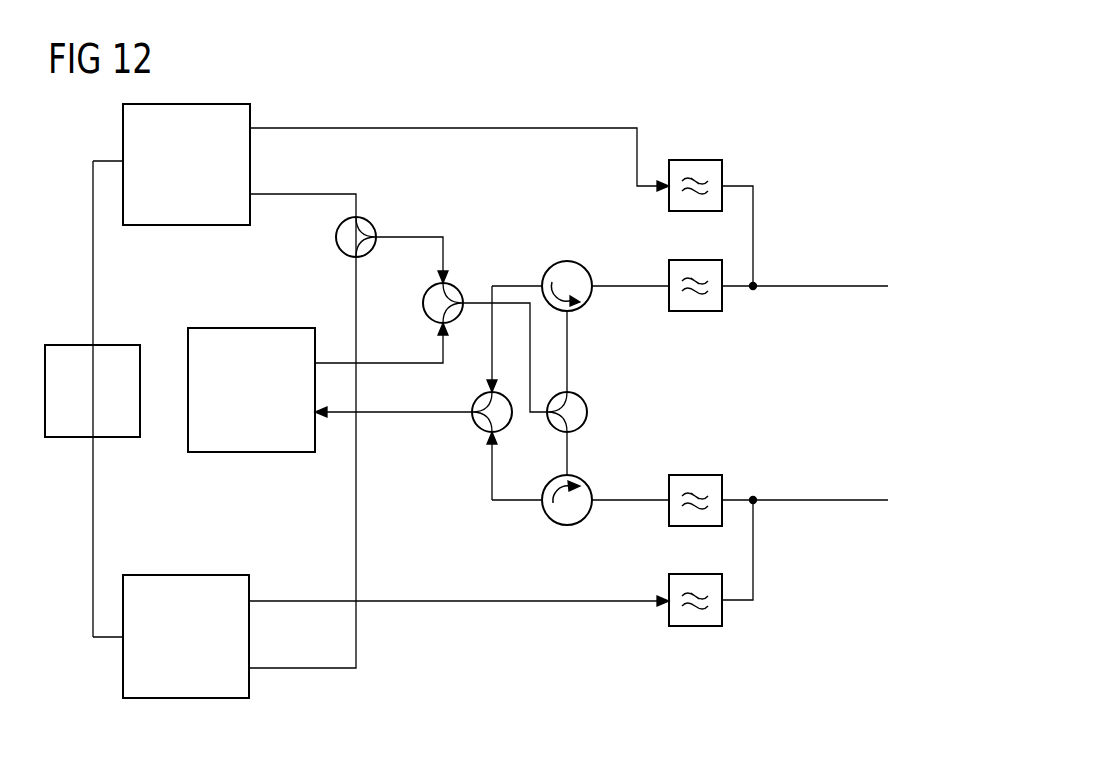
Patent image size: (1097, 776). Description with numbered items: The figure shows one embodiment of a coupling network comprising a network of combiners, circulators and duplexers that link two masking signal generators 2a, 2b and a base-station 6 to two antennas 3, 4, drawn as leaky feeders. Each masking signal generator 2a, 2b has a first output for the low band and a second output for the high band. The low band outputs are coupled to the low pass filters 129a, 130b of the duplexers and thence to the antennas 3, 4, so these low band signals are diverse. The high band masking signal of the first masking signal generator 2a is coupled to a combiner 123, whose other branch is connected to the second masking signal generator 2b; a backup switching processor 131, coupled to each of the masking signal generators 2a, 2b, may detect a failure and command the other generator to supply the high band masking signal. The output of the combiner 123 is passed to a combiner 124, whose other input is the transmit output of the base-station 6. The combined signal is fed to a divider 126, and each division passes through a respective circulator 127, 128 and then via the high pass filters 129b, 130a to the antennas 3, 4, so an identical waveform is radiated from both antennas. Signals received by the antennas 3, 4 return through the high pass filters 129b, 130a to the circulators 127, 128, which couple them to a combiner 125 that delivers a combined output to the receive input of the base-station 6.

The masking signal generator 2a is at (185, 225).
The masking signal generator 2b is at (185, 575).
The antenna 3 is at (861, 282).
The antenna 4 is at (861, 496).
The base-station 6 is at (255, 328).
The combiner 123 is at (371, 224).
The combiner 124 is at (456, 285).
The combiner 125 is at (477, 432).
The divider 126 is at (587, 415).
The circulator 127 is at (571, 261).
The circulator 128 is at (567, 525).
The low pass filter 129a is at (697, 160).
The high pass filter 129b is at (697, 311).
The high pass filter 130a is at (697, 475).
The low pass filter 130b is at (697, 626).
The backup switching processor 131 is at (120, 345).